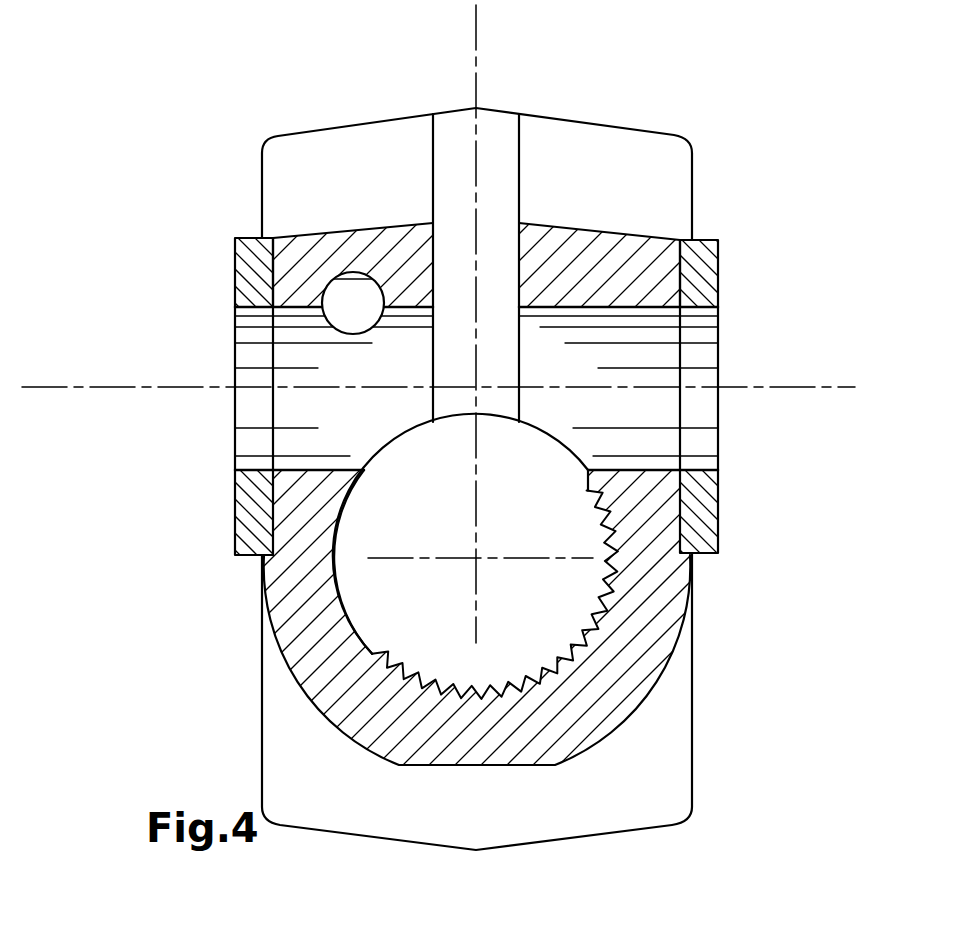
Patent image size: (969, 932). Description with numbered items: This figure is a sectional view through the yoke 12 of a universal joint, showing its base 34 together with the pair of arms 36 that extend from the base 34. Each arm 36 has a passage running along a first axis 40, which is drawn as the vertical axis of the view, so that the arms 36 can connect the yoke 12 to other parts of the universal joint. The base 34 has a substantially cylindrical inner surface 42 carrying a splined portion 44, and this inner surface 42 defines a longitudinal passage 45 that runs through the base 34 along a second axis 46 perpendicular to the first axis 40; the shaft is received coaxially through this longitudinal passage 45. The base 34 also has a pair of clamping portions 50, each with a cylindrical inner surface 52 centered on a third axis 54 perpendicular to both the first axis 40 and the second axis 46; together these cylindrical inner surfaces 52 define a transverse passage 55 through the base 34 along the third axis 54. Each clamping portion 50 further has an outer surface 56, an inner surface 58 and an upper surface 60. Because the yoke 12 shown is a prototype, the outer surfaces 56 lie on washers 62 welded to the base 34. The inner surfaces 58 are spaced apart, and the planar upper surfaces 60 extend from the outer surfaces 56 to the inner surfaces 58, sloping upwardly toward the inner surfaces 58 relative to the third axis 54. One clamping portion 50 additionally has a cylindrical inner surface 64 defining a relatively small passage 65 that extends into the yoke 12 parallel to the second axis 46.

The yoke 12 is at (173, 230).
The base 34 is at (303, 690).
The arms 36 is at (476, 108).
The first axis 40 is at (476, 20).
The inner surface 42 is at (372, 650).
The splined portion 44 is at (568, 660).
The longitudinal passage 45 is at (377, 590).
The second axis 46 is at (487, 558).
The clamping portions 50 is at (288, 253).
The cylindrical inner surface 52 is at (328, 470).
The third axis 54 is at (118, 387).
The transverse passage 55 is at (313, 352).
The outer surface 56 is at (236, 305).
The inner surface 58 is at (435, 255).
The upper surface 60 is at (393, 222).
The washers 62 is at (236, 518).
The cylindrical inner surface 64 is at (333, 272).
The passage 65 is at (345, 322).